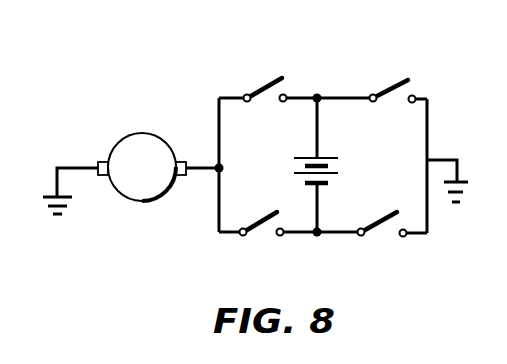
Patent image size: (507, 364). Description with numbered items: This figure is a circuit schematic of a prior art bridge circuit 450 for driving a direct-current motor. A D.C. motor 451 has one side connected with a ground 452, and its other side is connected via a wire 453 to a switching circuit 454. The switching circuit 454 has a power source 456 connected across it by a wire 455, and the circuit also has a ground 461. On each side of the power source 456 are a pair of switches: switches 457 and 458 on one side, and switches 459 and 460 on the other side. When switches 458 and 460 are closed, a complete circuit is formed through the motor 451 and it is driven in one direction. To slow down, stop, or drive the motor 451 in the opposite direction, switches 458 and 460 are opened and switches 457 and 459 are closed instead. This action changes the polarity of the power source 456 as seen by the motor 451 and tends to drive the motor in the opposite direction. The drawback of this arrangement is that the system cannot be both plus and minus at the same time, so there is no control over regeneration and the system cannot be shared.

The motor drive circuit 450 is at (157, 112).
The D.C. motor 451 is at (137, 133).
The ground 452 is at (80, 166).
The wire 453 is at (197, 170).
The switching circuit 454 is at (218, 117).
The wire 455 is at (318, 140).
The power source 456 is at (300, 174).
The switch 457 is at (260, 237).
The switch 458 is at (265, 87).
The switch 459 is at (387, 88).
The switch 460 is at (382, 228).
The ground 461 is at (442, 160).